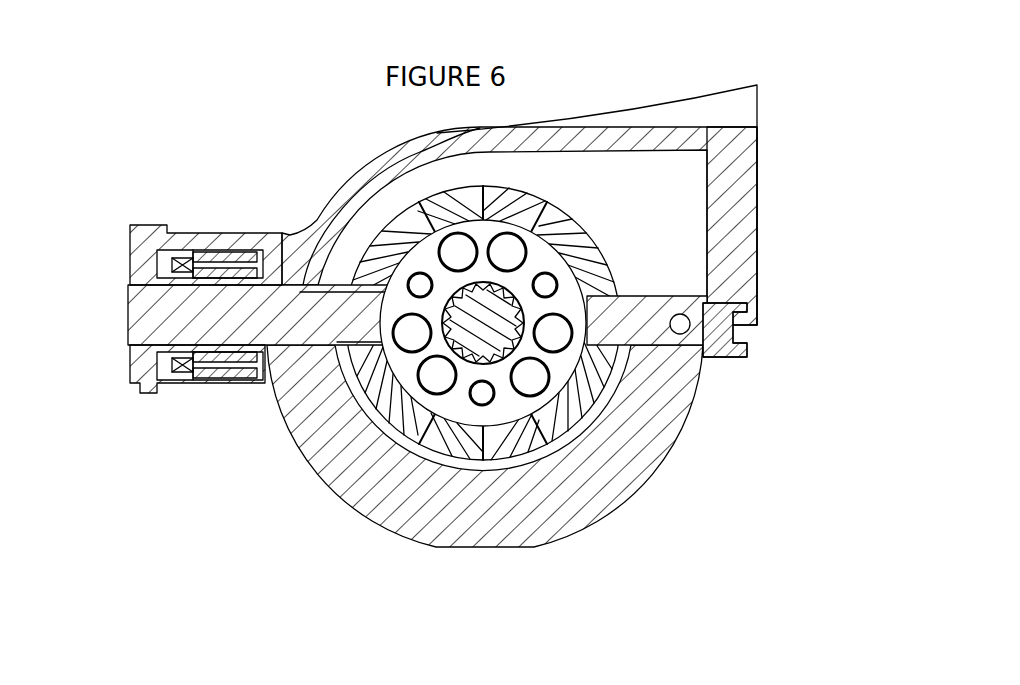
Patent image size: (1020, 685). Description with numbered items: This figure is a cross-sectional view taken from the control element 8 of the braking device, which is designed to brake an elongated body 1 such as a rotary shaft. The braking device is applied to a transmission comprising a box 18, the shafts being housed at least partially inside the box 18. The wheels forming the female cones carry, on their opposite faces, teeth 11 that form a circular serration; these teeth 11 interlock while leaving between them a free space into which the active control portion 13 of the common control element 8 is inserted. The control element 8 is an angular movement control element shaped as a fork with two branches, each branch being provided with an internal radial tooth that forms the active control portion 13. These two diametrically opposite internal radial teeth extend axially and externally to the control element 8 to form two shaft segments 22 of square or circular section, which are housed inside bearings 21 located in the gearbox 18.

The elongated body 1 is at (500, 362).
The control element 8 is at (648, 484).
The teeth 11 is at (588, 222).
The active control portion 13 is at (362, 313).
The box 18 is at (757, 228).
The bearings 21 is at (737, 353).
The shaft segments 22 is at (180, 313).